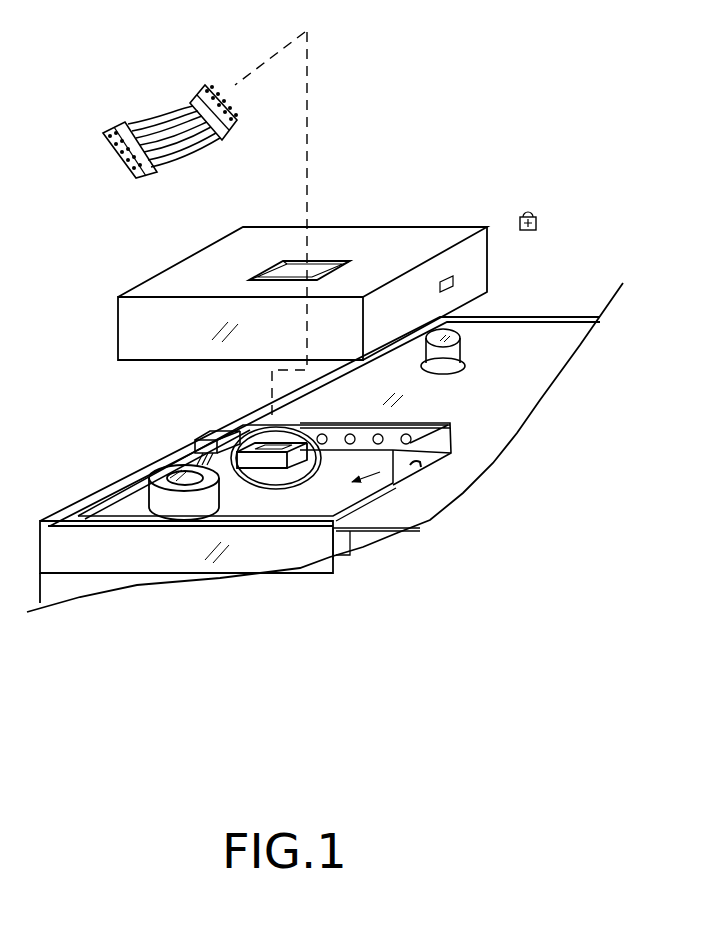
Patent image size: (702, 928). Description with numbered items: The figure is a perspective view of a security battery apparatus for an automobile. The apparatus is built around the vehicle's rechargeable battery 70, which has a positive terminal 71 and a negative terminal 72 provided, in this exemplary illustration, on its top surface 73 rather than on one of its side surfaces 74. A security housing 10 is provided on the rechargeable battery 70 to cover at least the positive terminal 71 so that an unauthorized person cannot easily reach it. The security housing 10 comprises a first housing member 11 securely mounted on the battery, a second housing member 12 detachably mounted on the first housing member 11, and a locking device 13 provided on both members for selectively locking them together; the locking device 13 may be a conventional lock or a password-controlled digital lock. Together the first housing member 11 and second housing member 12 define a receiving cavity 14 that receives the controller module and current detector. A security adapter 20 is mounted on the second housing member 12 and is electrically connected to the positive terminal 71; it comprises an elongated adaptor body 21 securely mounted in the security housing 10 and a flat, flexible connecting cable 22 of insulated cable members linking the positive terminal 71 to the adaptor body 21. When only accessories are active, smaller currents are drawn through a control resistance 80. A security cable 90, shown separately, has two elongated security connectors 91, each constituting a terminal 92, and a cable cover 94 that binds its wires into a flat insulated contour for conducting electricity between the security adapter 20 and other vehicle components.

The security housing 10 is at (453, 140).
The first housing member 11 is at (325, 447).
The second housing member 12 is at (345, 235).
The locking device 13 is at (530, 212).
The receiving cavity 14 is at (322, 473).
The security adapter 20 is at (285, 477).
The adaptor body 21 is at (260, 462).
The connecting cable 22 is at (126, 594).
The rechargeable battery 70 is at (216, 558).
The positive terminal 71 is at (150, 477).
The negative terminal 72 is at (455, 338).
The top surface 73 is at (437, 406).
The side surfaces 74 is at (190, 560).
The control resistance 80 is at (197, 440).
The security cable 90 is at (110, 66).
The security connectors 91 is at (147, 160).
The terminal 92 is at (208, 88).
The cable cover 94 is at (147, 118).